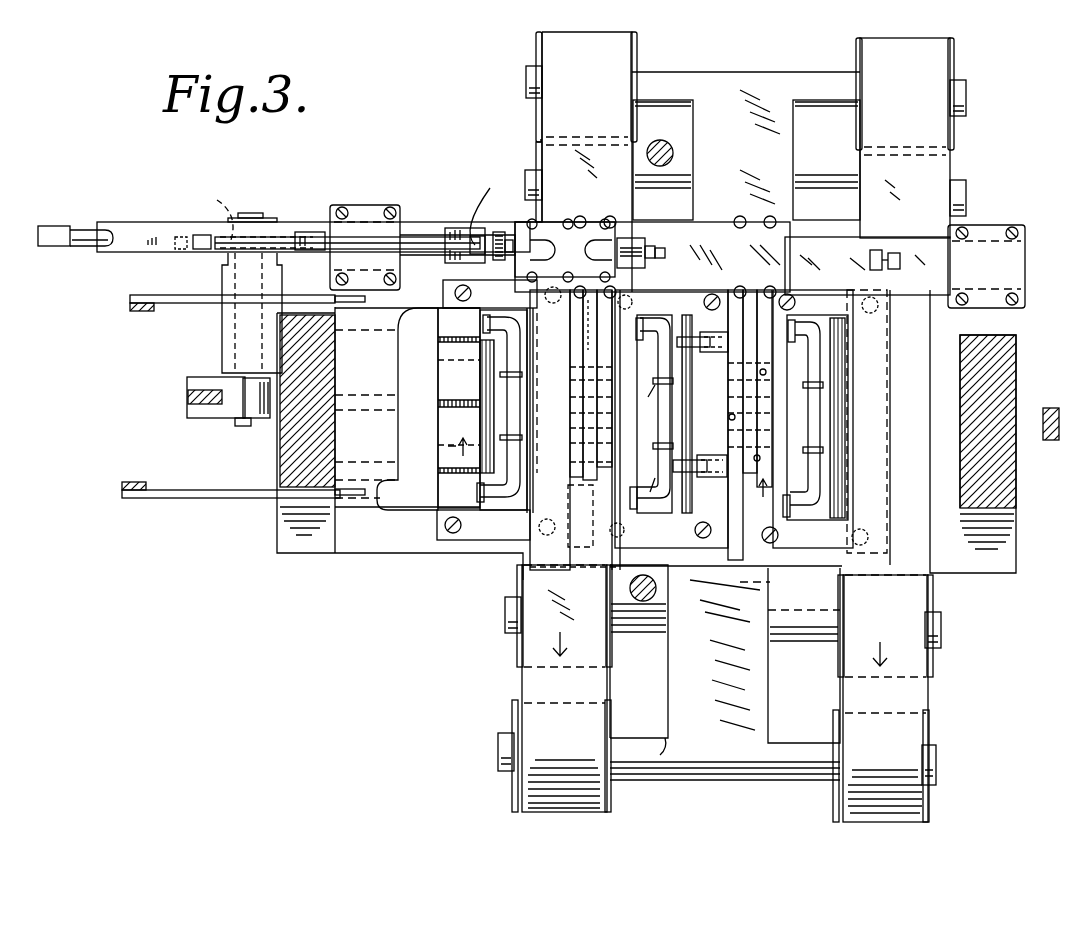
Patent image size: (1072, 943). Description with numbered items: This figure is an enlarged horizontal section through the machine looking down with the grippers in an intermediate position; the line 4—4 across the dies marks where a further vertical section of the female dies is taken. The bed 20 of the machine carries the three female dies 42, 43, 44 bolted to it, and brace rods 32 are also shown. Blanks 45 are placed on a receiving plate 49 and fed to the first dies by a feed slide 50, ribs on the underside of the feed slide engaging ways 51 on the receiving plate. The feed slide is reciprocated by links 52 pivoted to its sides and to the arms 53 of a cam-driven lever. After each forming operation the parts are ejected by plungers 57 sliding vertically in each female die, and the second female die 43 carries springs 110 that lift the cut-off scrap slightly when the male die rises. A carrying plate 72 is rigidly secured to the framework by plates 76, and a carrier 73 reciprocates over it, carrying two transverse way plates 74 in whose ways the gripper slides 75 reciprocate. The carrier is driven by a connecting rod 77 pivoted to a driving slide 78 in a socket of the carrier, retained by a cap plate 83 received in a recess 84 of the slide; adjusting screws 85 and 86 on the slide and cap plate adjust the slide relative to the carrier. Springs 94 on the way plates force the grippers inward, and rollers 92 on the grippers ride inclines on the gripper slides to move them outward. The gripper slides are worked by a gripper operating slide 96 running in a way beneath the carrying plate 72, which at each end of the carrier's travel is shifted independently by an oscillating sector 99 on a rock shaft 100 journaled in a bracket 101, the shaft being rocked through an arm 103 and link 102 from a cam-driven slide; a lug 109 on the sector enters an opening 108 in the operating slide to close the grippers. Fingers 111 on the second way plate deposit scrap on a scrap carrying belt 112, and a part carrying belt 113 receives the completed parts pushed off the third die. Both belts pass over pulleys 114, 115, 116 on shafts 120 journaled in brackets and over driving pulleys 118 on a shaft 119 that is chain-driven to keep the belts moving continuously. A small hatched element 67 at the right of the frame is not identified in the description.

The section line 4 is at (455, 446).
The bed 20 is at (1016, 488).
The brace rods 32 is at (680, 588).
The female die 42 is at (485, 525).
The second female die 43 is at (680, 530).
The female die 44 is at (825, 537).
The blanks 45 is at (407, 409).
The receiving plate 49 is at (466, 408).
The feed slide 50 is at (407, 407).
The ways 51 is at (458, 477).
The links 52 is at (210, 504).
The arms 53 is at (170, 470).
The plungers 57 is at (680, 490).
The key 67 is at (1044, 440).
The carrying plate 72 is at (432, 230).
The carrier 73 is at (652, 257).
The transverse plates 74 is at (770, 390).
The gripper slides 75 is at (651, 430).
The plates 76 is at (365, 210).
The connecting rod 77 is at (365, 250).
The driving slide 78 is at (472, 201).
The cap plate 83 is at (565, 250).
The recess 84 is at (478, 228).
The adjusting screw 85 is at (668, 240).
The adjusting screw 86 is at (507, 238).
The rollers 92 is at (705, 438).
The springs 94 is at (660, 425).
The gripper operating slide 96 is at (175, 212).
The oscillating sector 99 is at (215, 230).
The rock shaft 100 is at (232, 426).
The bracket 101 is at (225, 340).
The link 102 is at (187, 398).
The arm 103 is at (225, 415).
The opening 108 is at (198, 250).
The lug 109 is at (315, 230).
The springs 110 is at (786, 361).
The fingers 111 is at (712, 472).
The scrap carrying belt 112 is at (577, 422).
The part carrying belt 113 is at (896, 430).
The pulleys 114 is at (955, 45).
The pulleys 115 is at (935, 660).
The pulleys 116 is at (922, 795).
The driving pulleys 118 is at (954, 154).
The shaft 119 is at (800, 622).
The shafts 120 is at (936, 752).